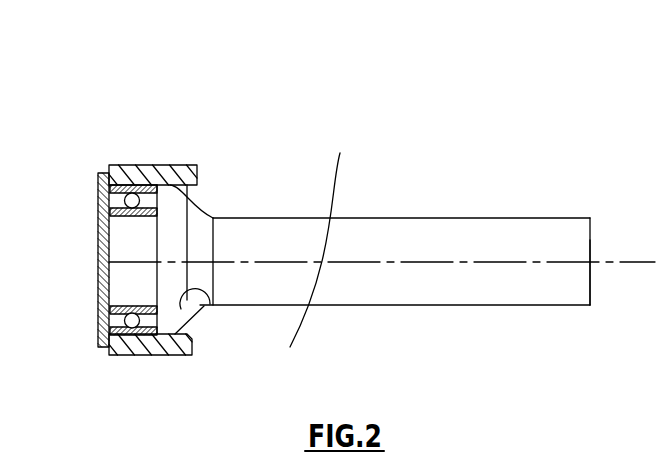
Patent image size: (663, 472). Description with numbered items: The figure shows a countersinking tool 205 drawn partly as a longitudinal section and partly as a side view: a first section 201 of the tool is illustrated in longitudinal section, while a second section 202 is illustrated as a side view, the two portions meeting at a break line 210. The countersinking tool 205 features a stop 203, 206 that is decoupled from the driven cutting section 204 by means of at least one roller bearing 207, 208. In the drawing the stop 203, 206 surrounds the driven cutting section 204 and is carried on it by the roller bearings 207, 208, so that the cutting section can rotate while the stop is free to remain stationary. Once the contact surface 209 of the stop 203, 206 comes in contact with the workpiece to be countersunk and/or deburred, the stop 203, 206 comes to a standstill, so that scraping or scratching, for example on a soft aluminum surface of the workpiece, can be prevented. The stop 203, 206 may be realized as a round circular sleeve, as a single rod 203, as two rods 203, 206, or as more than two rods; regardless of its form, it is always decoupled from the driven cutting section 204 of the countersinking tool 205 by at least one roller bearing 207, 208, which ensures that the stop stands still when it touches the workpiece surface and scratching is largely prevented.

The first section 201 is at (205, 90).
The second section 202 is at (506, 181).
The stop 203 is at (172, 175).
The driven cutting section 204 is at (198, 233).
The countersinking tool 205 is at (543, 290).
The stop 206 is at (167, 343).
The roller bearing 207 is at (124, 321).
The roller bearing 208 is at (124, 200).
The contact surface 209 is at (199, 169).
The break line 210 is at (357, 174).